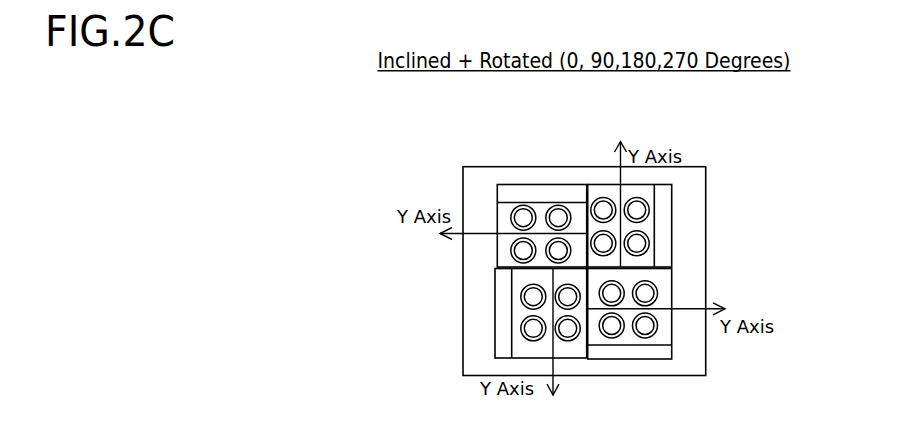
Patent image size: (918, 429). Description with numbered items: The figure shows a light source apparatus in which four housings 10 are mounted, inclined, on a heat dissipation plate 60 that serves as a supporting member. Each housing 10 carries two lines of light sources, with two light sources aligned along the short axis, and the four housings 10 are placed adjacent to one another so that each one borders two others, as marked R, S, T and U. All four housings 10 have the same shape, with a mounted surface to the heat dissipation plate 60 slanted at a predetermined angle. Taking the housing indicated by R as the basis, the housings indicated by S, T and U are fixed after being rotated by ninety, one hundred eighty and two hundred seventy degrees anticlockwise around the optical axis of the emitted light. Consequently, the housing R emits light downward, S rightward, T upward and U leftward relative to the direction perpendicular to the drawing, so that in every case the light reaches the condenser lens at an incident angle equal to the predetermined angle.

The housing 10 is at (535, 189).
The heat dissipation plate 60 is at (697, 175).
The housing indicated by R is at (535, 226).
The housing indicated by U is at (630, 217).
The housing indicated by T is at (641, 314).
The housing indicated by S is at (541, 324).